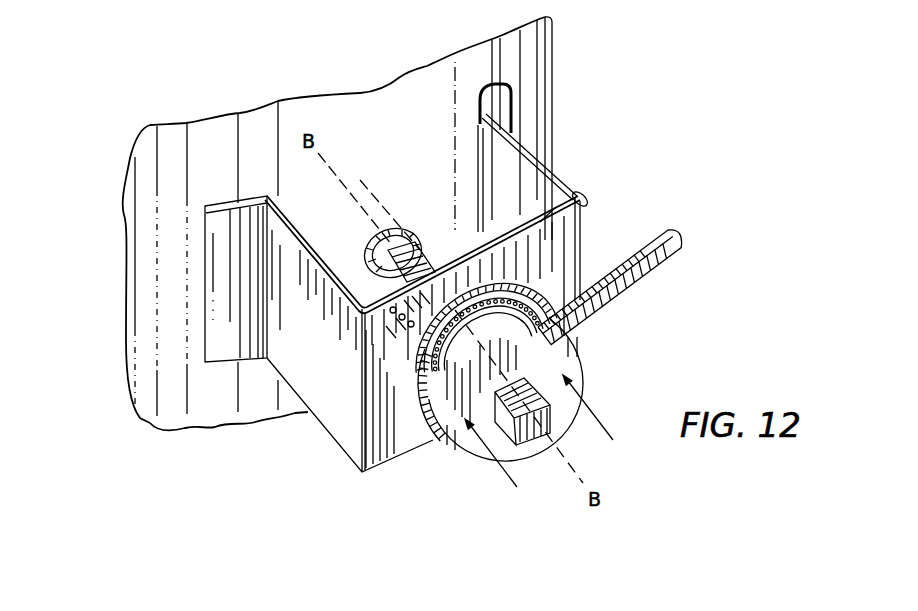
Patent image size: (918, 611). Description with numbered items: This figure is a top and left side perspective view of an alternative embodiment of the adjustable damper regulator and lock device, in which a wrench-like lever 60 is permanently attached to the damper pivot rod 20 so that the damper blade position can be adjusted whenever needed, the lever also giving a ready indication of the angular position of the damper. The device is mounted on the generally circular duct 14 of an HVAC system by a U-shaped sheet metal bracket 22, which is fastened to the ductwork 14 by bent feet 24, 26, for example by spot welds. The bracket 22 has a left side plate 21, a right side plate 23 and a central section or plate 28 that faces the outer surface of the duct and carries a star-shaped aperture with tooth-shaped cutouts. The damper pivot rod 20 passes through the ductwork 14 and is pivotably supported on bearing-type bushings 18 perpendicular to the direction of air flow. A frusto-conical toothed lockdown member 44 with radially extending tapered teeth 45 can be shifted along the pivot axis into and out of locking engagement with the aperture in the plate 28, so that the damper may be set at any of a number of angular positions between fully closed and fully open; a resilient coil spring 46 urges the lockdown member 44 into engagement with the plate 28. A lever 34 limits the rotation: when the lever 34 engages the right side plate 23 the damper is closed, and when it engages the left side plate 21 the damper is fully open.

The duct 14 is at (386, 142).
The bushings 18 is at (412, 230).
The damper pivot rod 20 is at (433, 242).
The left side plate 21 is at (324, 344).
The U-shaped bracket 22 is at (575, 255).
The right side plate 23 is at (543, 220).
The bent foot 24 is at (217, 259).
The bent foot 26 is at (507, 133).
The central plate 28 is at (436, 440).
The lever 34 is at (584, 197).
The frusto-conical toothed lockdown member 44 is at (425, 325).
The tapered teeth 45 is at (400, 345).
The resilient coil spring 46 is at (545, 290).
The wrench-like lever 60 is at (574, 373).